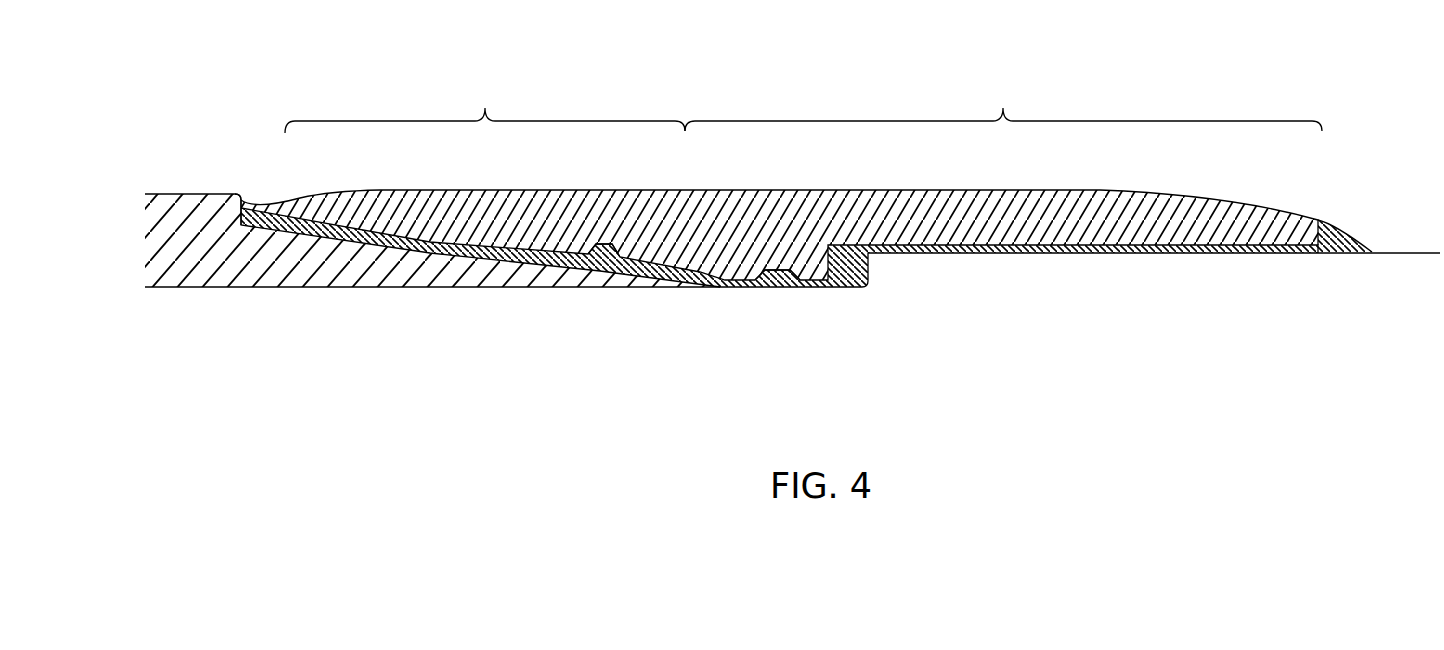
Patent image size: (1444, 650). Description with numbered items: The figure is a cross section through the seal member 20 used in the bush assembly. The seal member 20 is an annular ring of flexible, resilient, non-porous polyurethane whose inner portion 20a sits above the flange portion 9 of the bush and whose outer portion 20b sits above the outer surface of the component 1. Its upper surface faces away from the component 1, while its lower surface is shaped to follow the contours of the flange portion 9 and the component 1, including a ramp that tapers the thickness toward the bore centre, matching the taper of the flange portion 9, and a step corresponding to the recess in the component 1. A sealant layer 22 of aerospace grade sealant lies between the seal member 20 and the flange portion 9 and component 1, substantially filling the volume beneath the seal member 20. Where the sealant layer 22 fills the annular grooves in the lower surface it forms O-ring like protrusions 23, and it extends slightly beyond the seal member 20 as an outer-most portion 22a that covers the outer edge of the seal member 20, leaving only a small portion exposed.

The component 1 is at (1006, 356).
The flange portion 9 is at (228, 263).
The seal member 20 is at (1046, 226).
The inner portion 20a is at (513, 87).
The outer portion 20b is at (1000, 104).
The sealant layer 22 is at (856, 288).
The outer-most portion 22a is at (1337, 228).
The protrusions 23 is at (601, 276).